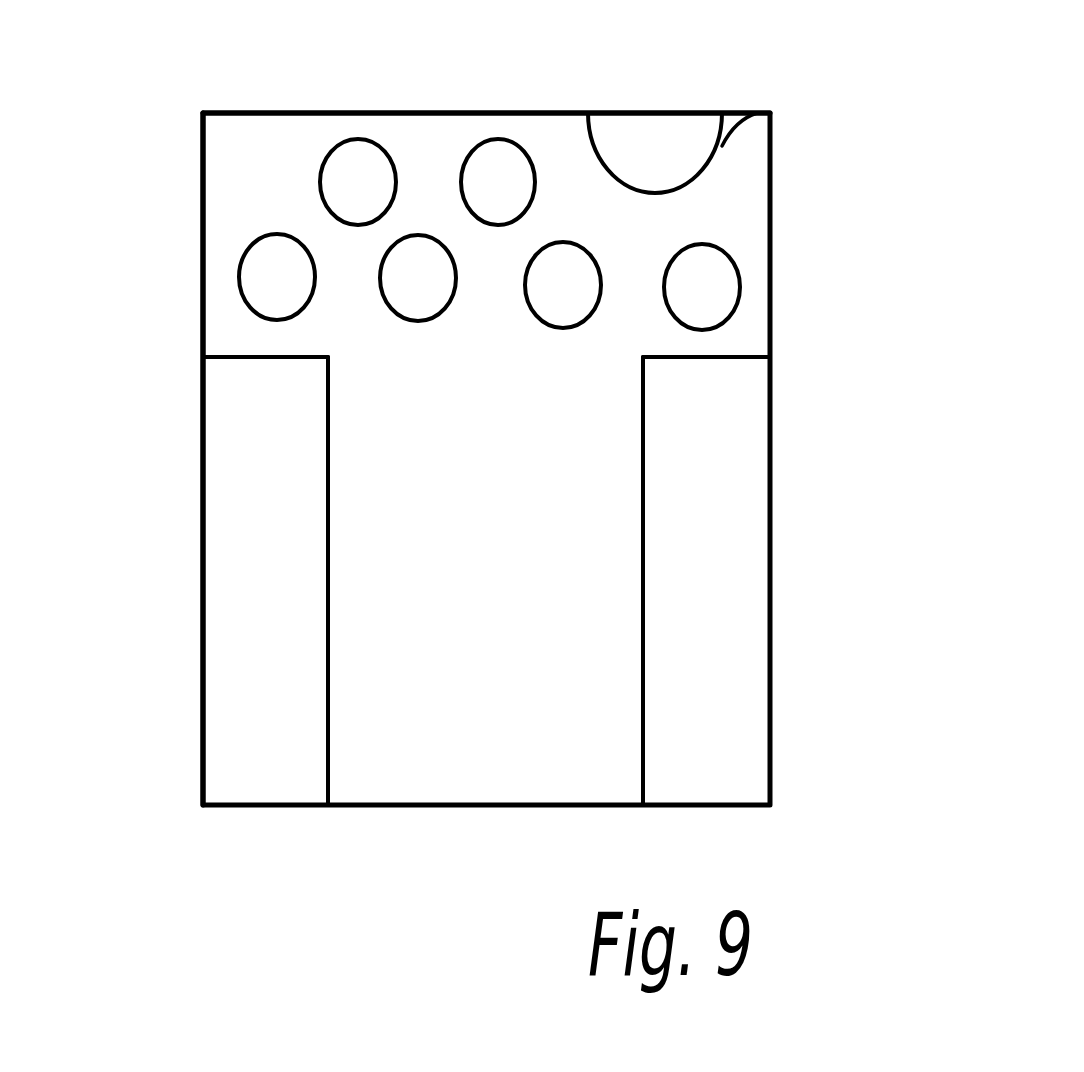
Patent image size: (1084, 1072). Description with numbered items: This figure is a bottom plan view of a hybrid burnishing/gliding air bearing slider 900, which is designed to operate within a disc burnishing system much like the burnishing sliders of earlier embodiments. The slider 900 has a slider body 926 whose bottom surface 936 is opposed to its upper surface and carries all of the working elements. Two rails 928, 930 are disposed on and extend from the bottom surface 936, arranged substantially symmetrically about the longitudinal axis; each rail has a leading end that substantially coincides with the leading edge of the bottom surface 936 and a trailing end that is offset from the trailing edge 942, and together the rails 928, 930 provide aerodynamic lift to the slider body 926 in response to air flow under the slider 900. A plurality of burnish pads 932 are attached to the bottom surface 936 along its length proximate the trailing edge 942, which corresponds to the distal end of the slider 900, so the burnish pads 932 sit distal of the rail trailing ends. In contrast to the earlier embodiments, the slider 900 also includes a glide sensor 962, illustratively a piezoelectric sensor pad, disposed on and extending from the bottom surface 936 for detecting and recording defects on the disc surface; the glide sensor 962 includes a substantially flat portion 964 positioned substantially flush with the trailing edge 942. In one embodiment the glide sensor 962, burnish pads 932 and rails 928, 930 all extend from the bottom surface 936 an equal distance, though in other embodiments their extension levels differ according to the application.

The hybrid burnishing/gliding air bearing slider 900 is at (823, 181).
The slider body 926 is at (299, 112).
The trailing edge 942 is at (230, 110).
The burnish pads 932 is at (487, 138).
The substantially flat portion 964 is at (664, 112).
The glide sensor 962 is at (758, 112).
The bottom surface 936 is at (540, 484).
The second rail 930 is at (237, 649).
The first rail 928 is at (738, 600).